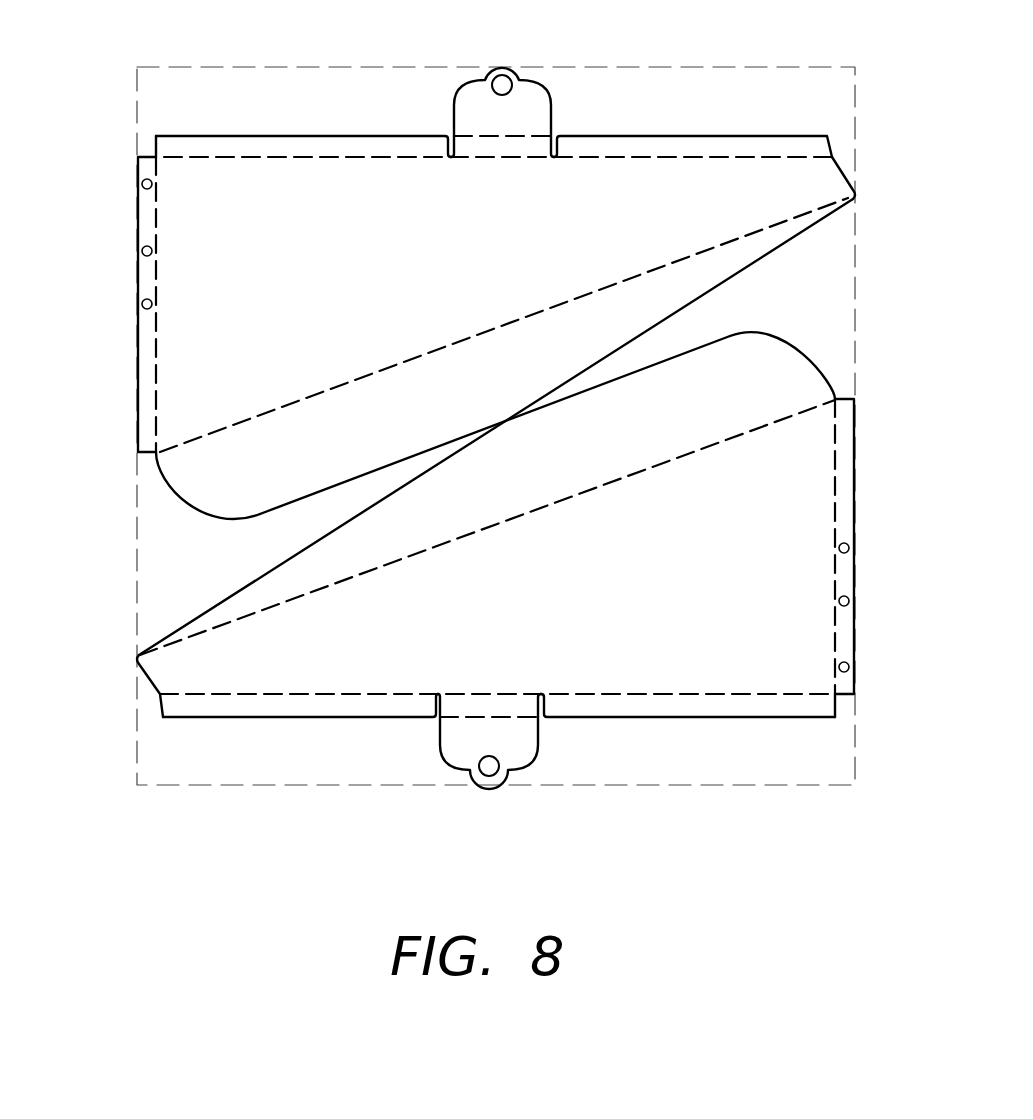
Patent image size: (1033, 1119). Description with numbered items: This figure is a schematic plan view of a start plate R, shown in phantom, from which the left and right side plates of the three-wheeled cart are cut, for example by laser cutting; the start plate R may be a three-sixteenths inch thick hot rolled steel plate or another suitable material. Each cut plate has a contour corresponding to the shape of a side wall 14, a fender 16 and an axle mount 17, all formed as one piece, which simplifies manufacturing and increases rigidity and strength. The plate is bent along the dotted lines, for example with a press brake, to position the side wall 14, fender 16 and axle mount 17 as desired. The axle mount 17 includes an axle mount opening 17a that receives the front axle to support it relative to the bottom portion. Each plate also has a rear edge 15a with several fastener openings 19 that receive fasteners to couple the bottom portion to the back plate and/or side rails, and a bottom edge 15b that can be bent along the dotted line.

The start plate R is at (750, 67).
The side wall 14 is at (362, 263).
The rear edge 15a is at (138, 274).
The bottom edge 15b is at (660, 136).
The fender 16 is at (432, 401).
The axle mount 17 is at (522, 108).
The axle mount opening 17a is at (492, 770).
The fastener openings 19 is at (849, 548).